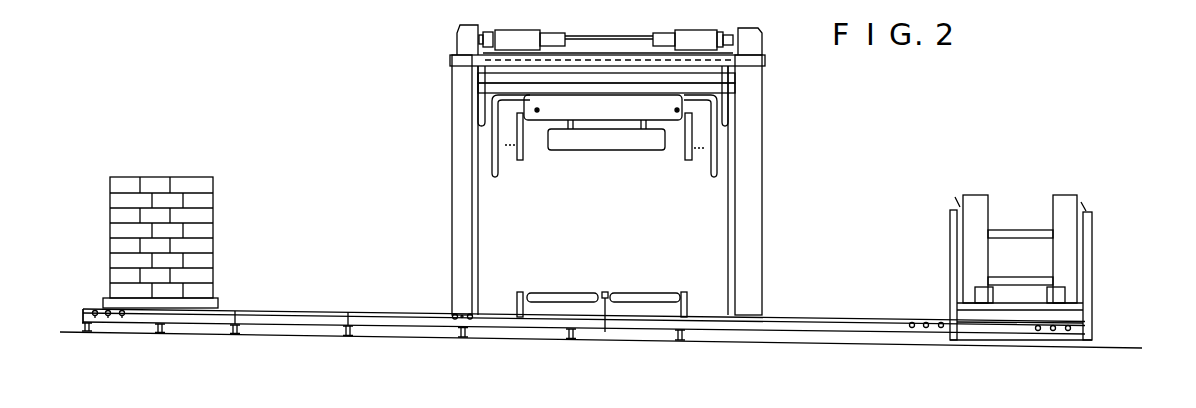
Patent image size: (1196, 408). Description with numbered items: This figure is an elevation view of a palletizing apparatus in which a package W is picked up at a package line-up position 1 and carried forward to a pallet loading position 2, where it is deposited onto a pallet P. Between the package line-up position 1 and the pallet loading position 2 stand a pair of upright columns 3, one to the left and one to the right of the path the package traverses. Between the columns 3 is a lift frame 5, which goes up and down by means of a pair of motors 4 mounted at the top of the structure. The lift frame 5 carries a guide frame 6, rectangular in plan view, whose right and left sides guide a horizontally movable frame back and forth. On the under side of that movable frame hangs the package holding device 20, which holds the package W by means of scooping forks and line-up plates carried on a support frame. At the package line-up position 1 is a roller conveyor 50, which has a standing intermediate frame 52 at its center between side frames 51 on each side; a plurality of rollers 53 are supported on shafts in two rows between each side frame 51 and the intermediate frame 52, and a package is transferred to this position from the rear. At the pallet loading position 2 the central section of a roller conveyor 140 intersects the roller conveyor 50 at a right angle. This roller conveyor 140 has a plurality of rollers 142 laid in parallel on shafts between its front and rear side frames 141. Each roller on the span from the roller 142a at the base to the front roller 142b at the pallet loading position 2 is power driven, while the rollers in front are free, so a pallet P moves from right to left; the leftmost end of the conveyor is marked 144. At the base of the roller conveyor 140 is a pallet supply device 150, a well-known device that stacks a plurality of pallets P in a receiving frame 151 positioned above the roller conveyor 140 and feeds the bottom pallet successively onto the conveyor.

The package line-up position 1 is at (605, 185).
The pallet loading position 2 is at (640, 225).
The upright columns 3 is at (452, 172).
The motors 4 is at (526, 32).
The lift frame 5 is at (482, 78).
The guide frame 6 is at (485, 90).
The package holding device 20 is at (604, 176).
The roller conveyor 50 is at (602, 274).
The side frames 51 is at (516, 303).
The intermediate frame 52 is at (608, 300).
The rollers 53 is at (540, 294).
The roller conveyor 140 is at (583, 317).
The side frames 141 is at (795, 333).
The rollers 142 is at (97, 318).
The roller at the base 142a is at (1072, 335).
The front roller 142b is at (468, 320).
The end stop 144 is at (86, 310).
The pallet supply device 150 is at (1061, 290).
The receiving frame 151 is at (1075, 263).
The package W is at (213, 185).
The pallet P is at (218, 304).